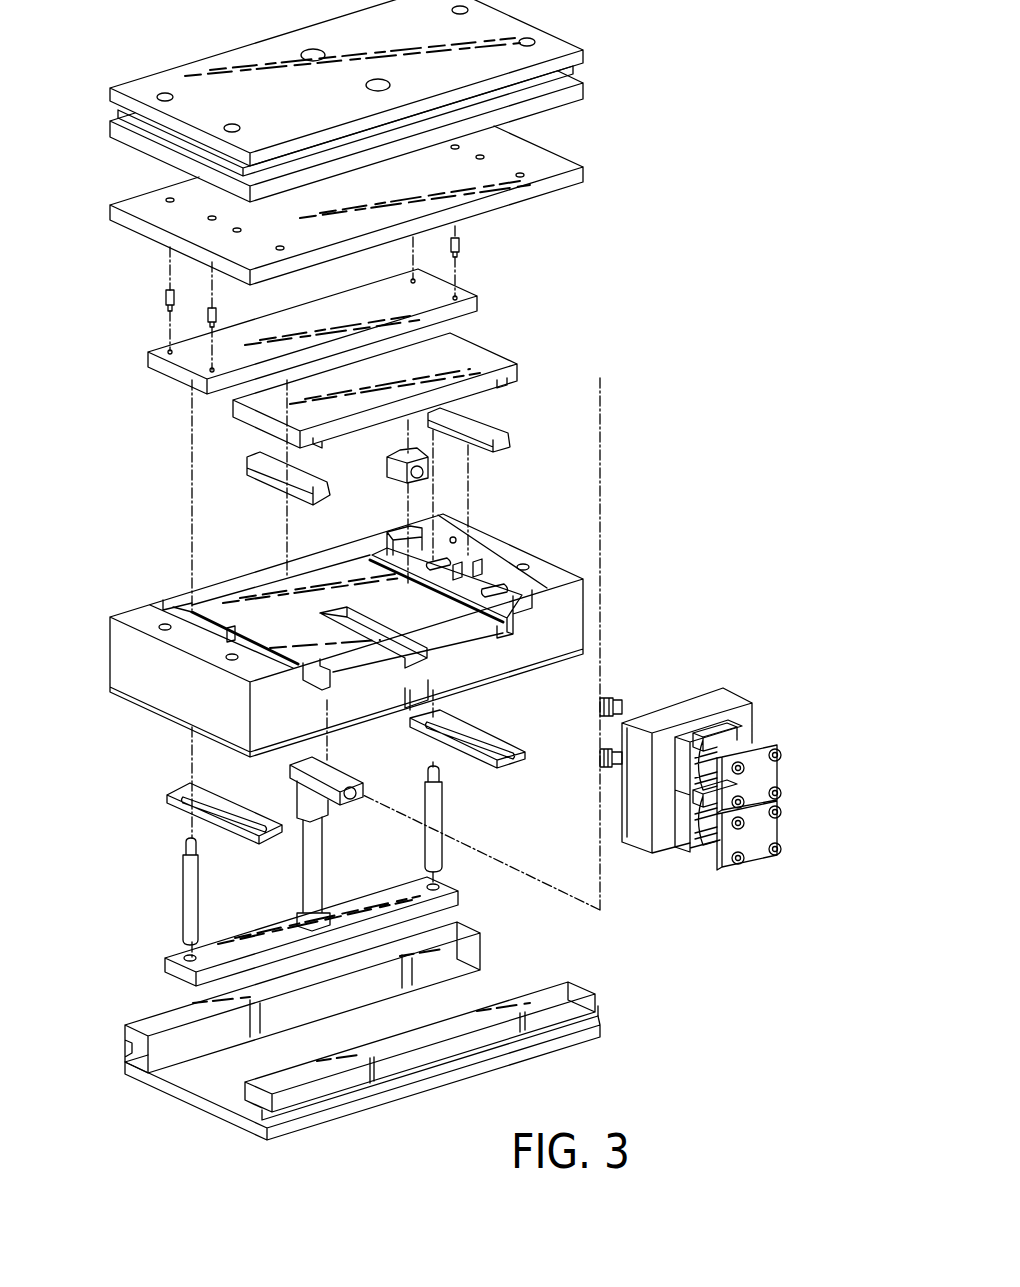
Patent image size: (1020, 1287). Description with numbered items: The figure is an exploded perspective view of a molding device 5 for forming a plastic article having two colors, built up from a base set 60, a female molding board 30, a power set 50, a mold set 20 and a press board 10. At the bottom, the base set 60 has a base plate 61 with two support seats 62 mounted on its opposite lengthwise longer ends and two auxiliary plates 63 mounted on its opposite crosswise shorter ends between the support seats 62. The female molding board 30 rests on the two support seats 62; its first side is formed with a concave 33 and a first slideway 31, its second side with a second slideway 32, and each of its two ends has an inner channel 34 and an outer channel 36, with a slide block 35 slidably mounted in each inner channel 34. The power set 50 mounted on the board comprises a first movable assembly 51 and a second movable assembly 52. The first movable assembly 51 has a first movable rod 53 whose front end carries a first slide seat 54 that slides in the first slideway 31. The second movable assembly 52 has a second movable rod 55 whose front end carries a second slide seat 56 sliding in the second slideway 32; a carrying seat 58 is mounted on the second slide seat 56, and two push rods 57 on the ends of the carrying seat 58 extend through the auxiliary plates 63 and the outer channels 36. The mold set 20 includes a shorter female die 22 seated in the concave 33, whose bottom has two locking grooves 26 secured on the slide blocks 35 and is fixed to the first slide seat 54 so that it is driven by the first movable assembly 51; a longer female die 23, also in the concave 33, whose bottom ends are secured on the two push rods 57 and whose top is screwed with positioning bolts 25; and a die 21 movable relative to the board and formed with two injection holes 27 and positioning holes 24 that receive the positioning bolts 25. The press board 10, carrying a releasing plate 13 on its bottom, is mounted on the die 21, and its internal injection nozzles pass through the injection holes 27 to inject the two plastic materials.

The molding device 5 is at (628, 201).
The press board 10 is at (178, 80).
The releasing plate 13 is at (115, 133).
The mold set 20 is at (68, 252).
The die 21 is at (125, 222).
The shorter female die 22 is at (243, 415).
The longer female die 23 is at (152, 363).
The positioning holes 24 is at (521, 174).
The positioning bolts 25 is at (462, 248).
The locking grooves 26 is at (504, 388).
The injection holes 27 is at (377, 204).
The female molding board 30 is at (108, 656).
The first slideway 31 is at (338, 612).
The second slideway 32 is at (413, 702).
The concave 33 is at (479, 625).
The inner channel 34 is at (367, 556).
The slide blocks 35 is at (247, 459).
The outer channel 36 is at (453, 565).
The power set 50 is at (822, 752).
The first movable assembly 51 is at (778, 770).
The second movable assembly 52 is at (772, 832).
The first movable rod 53 is at (623, 707).
The first slide seat 54 is at (430, 468).
The second movable rod 55 is at (614, 763).
The second slide seat 56 is at (340, 776).
The push rods 57 is at (190, 887).
The carrying seat 58 is at (165, 965).
The base set 60 is at (652, 920).
The base plate 61 is at (590, 1033).
The support seats 62 is at (468, 953).
The auxiliary plates 63 is at (172, 792).